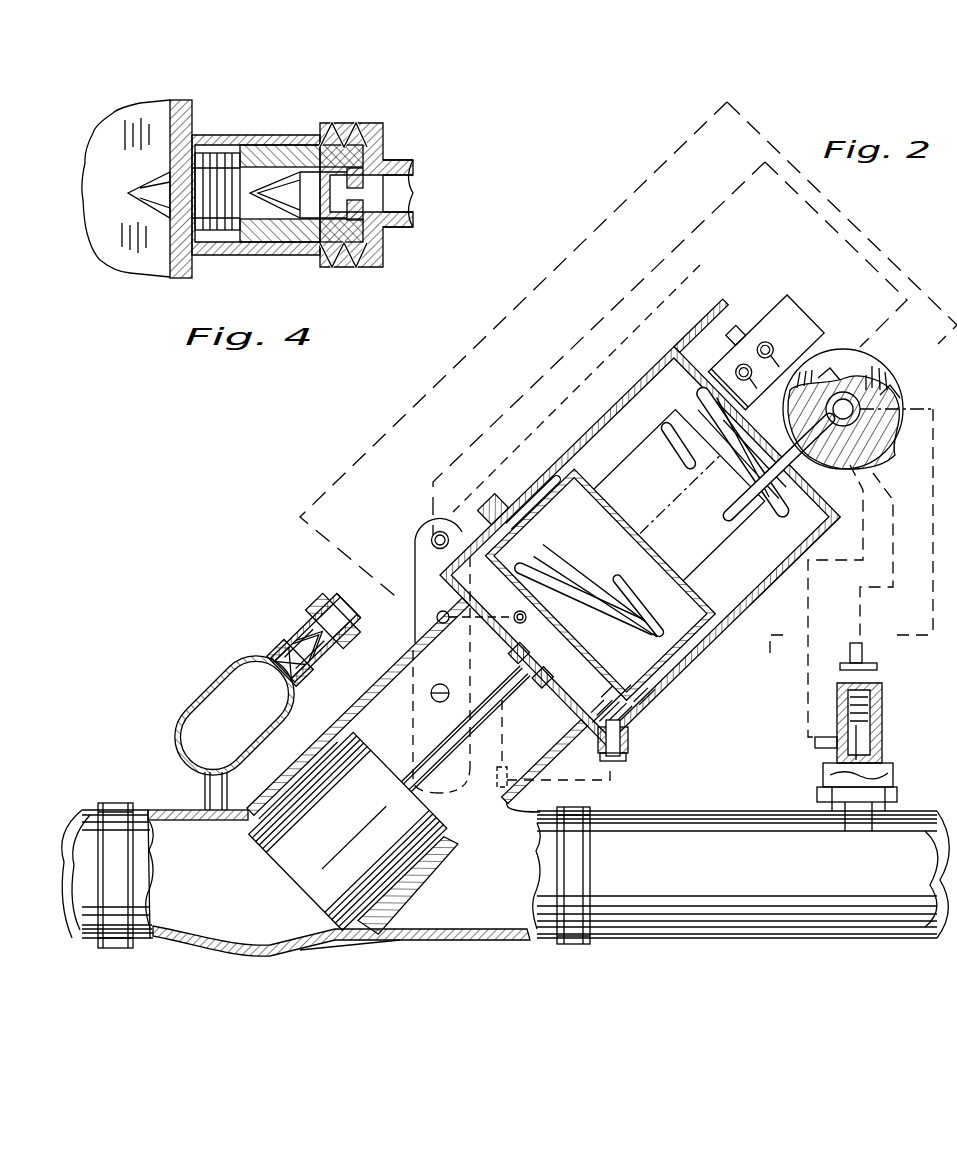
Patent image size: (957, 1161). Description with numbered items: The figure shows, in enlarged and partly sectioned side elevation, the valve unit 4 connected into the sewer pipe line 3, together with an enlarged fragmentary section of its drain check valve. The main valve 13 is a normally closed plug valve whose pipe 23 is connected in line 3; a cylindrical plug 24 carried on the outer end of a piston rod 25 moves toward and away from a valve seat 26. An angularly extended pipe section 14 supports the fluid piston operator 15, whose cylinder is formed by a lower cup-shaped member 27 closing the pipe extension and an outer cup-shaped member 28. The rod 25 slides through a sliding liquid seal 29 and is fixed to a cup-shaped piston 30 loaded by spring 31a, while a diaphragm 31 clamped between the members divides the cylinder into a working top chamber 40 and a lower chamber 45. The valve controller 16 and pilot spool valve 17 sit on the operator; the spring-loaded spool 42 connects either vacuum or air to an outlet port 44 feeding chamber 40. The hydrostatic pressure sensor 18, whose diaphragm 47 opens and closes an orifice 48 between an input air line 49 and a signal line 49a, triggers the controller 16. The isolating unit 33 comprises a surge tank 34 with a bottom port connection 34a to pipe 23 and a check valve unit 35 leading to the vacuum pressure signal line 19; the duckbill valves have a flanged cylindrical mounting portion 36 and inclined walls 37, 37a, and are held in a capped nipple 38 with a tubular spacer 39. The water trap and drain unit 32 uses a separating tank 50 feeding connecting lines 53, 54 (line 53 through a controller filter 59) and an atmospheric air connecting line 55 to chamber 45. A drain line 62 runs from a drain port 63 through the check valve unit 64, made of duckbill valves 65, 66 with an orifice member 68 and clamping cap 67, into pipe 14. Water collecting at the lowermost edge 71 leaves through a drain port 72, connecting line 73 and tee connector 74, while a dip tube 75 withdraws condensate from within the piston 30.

In FIG. 2, the sewer pipe line 3 is at (88, 810).
In FIG. 2, the valve unit 4 is at (910, 246).
In FIG. 2, the main valve 13 is at (348, 942).
In FIG. 2, the pipe section 14 is at (556, 788).
In FIG. 4, the pipe section 14 is at (183, 100).
In FIG. 2, the fluid piston operator 15 is at (736, 627).
In FIG. 2, the valve controller 16 is at (766, 302).
In FIG. 2, the pilot spool valve 17 is at (876, 352).
In FIG. 2, the hydrostatic pressure sensor 18 is at (884, 715).
In FIG. 2, the vacuum pressure signal line 19 is at (395, 420).
In FIG. 2, the pipe 23 is at (438, 940).
In FIG. 2, the cylindrical plug 24 is at (318, 827).
In FIG. 2, the piston rod 25 is at (505, 722).
In FIG. 2, the valve seat 26 is at (265, 843).
In FIG. 2, the lower cup-shaped member 27 is at (642, 706).
In FIG. 2, the outer cup-shaped member 28 is at (750, 592).
In FIG. 2, the sliding liquid seal 29 is at (556, 672).
In FIG. 2, the cup-shaped piston 30 is at (560, 500).
In FIG. 2, the diaphragm 31 is at (545, 486).
In FIG. 2, the spring 31a is at (663, 440).
In FIG. 2, the water trap and drain unit 32 is at (420, 538).
In FIG. 2, the pressure and material separating or isolating unit 33 is at (206, 691).
In FIG. 2, the surge tank 34 is at (220, 734).
In FIG. 2, the bottom port connection 34a is at (205, 790).
In FIG. 2, the check valve unit 35 is at (286, 626).
In FIG. 2, the flanged cylindrical mounting portion 36 is at (303, 668).
In FIG. 2, the flat inclined wall 37 is at (290, 697).
In FIG. 2, the flat inclined wall 37a is at (268, 663).
In FIG. 2, the capped nipple 38 is at (300, 598).
In FIG. 2, the tubular spacer 39 is at (322, 652).
In FIG. 2, the working top chamber 40 is at (638, 507).
In FIG. 2, the spring-loaded spool 42 is at (844, 393).
In FIG. 2, the outlet port 44 is at (858, 425).
In FIG. 2, the lower chamber 45 is at (593, 709).
In FIG. 2, the diaphragm 47 is at (895, 776).
In FIG. 2, the orifice 48 is at (880, 752).
In FIG. 2, the input air line 49 is at (808, 700).
In FIG. 2, the signal line 49a is at (864, 652).
In FIG. 2, the separating tank 50 is at (416, 580).
In FIG. 2, the connecting line 53 is at (472, 492).
In FIG. 2, the connecting line 54 is at (480, 441).
In FIG. 2, the atmospheric air connecting line 55 is at (436, 615).
In FIG. 2, the controller filter 59 is at (740, 330).
In FIG. 2, the drain line 62 is at (440, 793).
In FIG. 2, the drain port 63 is at (396, 790).
In FIG. 2, the check valve unit 64 is at (430, 702).
In FIG. 4, the check valve unit 64 is at (262, 110).
In FIG. 4, the duckbill valve 65 is at (333, 123).
In FIG. 2, the duckbill valve 66 is at (442, 684).
In FIG. 4, the duckbill valve 66 is at (212, 232).
In FIG. 4, the cap 67 is at (412, 160).
In FIG. 4, the orifice member 68 is at (412, 212).
In FIG. 2, the lowermost edge 71 is at (629, 736).
In FIG. 2, the drain port 72 is at (630, 760).
In FIG. 2, the connecting line 73 is at (626, 782).
In FIG. 2, the tee connector 74 is at (512, 766).
In FIG. 2, the dip tube 75 is at (745, 505).